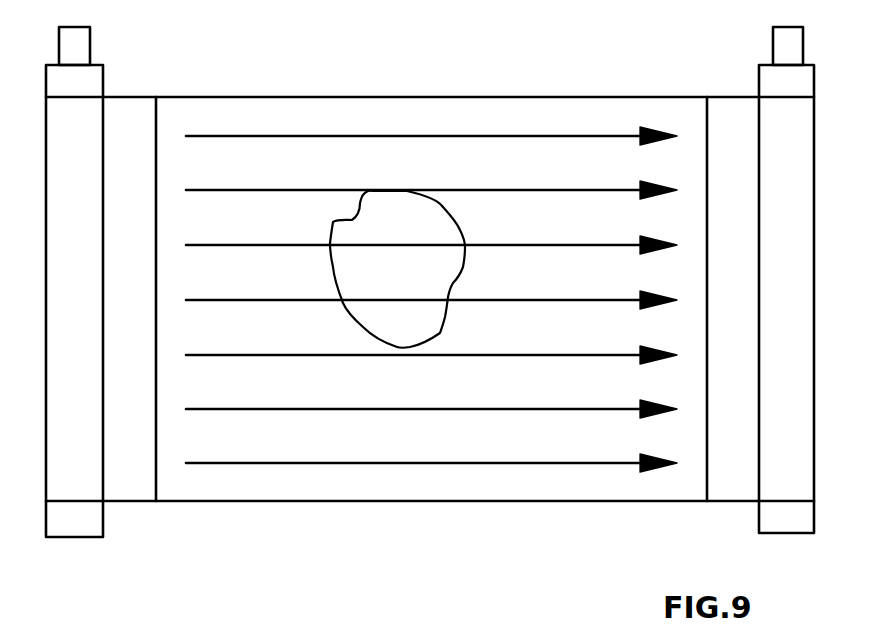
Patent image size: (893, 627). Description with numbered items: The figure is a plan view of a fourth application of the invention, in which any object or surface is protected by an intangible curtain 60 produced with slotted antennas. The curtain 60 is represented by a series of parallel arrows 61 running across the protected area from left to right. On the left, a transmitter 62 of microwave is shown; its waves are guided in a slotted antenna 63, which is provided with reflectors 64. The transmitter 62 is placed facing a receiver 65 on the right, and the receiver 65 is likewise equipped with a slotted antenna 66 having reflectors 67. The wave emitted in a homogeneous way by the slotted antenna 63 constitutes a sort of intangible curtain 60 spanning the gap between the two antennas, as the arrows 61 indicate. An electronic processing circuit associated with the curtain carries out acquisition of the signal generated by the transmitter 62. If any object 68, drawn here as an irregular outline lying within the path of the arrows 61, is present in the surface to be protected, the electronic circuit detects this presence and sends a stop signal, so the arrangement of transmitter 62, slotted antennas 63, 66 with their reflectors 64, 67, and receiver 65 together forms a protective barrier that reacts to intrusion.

The curtain 60 is at (431, 261).
The arrows 61 is at (538, 136).
The transmitter 62 is at (79, 50).
The slotted antenna 63 is at (62, 314).
The reflectors 64 is at (124, 488).
The receiver 65 is at (794, 47).
The slotted antenna 66 is at (798, 240).
The reflectors 67 is at (730, 488).
The object 68 is at (438, 274).